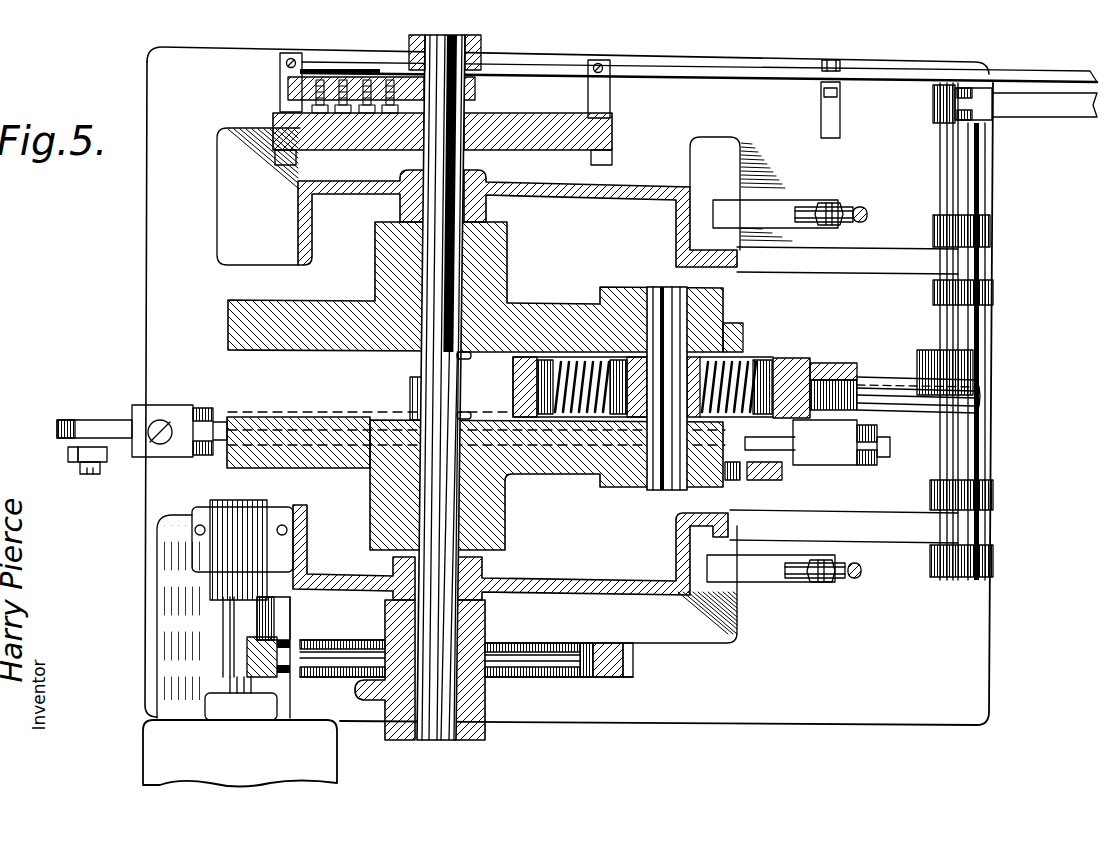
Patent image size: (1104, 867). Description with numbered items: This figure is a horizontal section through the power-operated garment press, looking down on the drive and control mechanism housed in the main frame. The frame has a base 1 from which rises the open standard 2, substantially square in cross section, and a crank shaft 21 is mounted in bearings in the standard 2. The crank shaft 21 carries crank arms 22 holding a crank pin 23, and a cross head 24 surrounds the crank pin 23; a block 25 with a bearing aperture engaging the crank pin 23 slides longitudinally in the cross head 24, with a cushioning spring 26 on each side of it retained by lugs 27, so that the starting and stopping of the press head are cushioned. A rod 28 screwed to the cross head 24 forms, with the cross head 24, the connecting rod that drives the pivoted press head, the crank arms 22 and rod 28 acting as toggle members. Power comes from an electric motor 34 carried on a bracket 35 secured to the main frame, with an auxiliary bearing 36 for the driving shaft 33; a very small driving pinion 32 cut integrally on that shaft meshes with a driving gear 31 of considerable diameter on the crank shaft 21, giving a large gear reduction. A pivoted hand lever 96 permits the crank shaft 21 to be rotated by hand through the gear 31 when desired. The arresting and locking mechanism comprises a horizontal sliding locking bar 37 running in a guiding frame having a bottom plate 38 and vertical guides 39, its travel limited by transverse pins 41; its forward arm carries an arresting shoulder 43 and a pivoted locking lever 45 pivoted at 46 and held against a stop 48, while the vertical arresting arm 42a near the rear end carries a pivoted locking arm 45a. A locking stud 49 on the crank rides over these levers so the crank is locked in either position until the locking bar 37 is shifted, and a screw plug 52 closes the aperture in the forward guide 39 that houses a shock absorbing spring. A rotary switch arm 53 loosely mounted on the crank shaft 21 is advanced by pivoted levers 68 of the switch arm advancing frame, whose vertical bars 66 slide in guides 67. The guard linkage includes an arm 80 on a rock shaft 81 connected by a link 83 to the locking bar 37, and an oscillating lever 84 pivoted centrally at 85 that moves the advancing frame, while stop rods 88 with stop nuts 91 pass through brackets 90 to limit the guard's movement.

The base 1 is at (802, 708).
The open standard 2 is at (737, 613).
The crank shaft 21 is at (456, 37).
The crank arms 22 is at (549, 315).
The crank pin 23 is at (655, 470).
The cross head 24 is at (800, 380).
The block 25 is at (745, 330).
The cushioning spring 26 is at (742, 363).
The lugs 27 is at (520, 370).
The rod 28 is at (873, 377).
The driving gear 31 is at (635, 658).
The driving pinion 32 is at (233, 608).
The driving shaft 33 is at (223, 687).
The electric motor 34 is at (320, 762).
The bracket 35 is at (165, 667).
The auxiliary bearing 36 is at (223, 533).
The horizontal sliding locking bar 37 is at (218, 423).
The bottom plate 38 is at (313, 416).
The vertically disposed guides 39 is at (155, 418).
The pins or studs 41 is at (203, 454).
The vertical arresting arm 42a is at (792, 440).
The arresting shoulder 43 is at (117, 440).
The pivoted locking lever 45 is at (85, 456).
The pivoted locking arm 45a is at (775, 472).
The pivot 46 is at (90, 474).
The stop 48 is at (72, 455).
The locking stud 49 is at (732, 480).
The screw plug 52 is at (547, 137).
The rotary switch arm 53 is at (383, 77).
The vertical bars 66 is at (292, 58).
The guides 67 is at (279, 85).
The pivoted levers 68 is at (352, 69).
The arm 80 is at (1025, 108).
The rock shaft 81 is at (973, 453).
The link 83 is at (418, 388).
The oscillating lever 84 is at (753, 72).
The pivot 85 is at (830, 60).
The stop rod 88 is at (862, 210).
The brackets 90 is at (783, 213).
The stop nuts 91 is at (830, 208).
The pivoted hand lever 96 is at (370, 692).